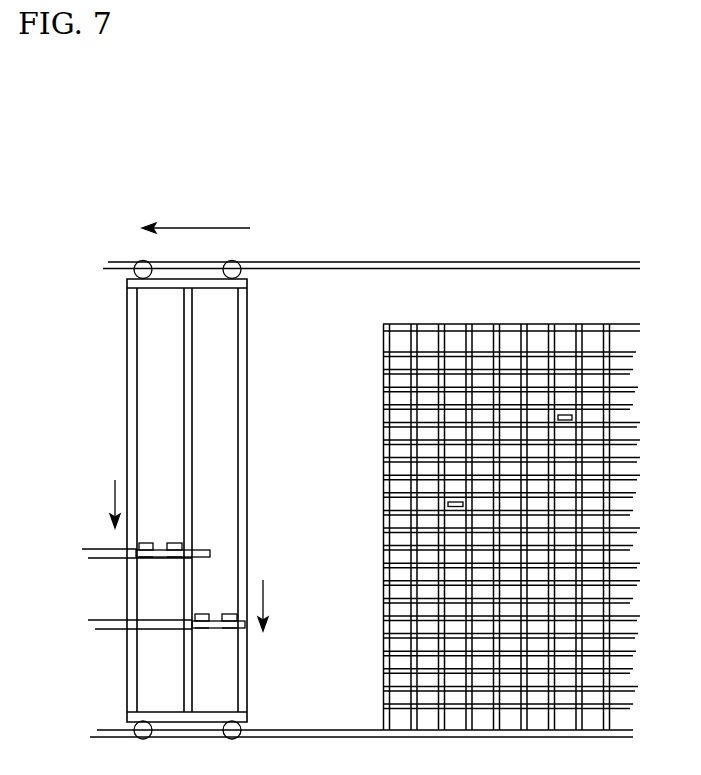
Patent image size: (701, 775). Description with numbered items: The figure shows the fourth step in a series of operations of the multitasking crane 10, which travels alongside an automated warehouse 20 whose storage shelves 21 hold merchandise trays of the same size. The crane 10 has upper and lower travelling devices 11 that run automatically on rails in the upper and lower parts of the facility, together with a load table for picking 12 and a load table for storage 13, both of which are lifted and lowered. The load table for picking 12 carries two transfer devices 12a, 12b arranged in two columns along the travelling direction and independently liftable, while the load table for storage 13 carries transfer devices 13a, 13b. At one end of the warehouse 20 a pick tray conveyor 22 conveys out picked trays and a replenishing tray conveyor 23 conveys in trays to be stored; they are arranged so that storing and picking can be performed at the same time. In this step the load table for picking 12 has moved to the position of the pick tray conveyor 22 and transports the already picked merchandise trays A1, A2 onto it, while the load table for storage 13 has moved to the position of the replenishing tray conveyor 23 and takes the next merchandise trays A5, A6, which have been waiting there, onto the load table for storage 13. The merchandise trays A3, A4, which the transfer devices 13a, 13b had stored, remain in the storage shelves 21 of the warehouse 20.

The multitasking crane 10 is at (117, 307).
The travelling devices 11 is at (243, 284).
The load table for picking 12 is at (158, 559).
The transfer device 12a is at (143, 559).
The transfer device 12b is at (176, 559).
The load table for storage 13 is at (213, 630).
The transfer device 13a is at (200, 630).
The transfer device 13b is at (233, 630).
The automated warehouse 20 is at (566, 324).
The storage shelves 21 is at (538, 342).
The pick tray conveyor 22 is at (101, 552).
The replenishing tray conveyor 23 is at (107, 623).
The merchandise tray A1 is at (147, 537).
The merchandise tray A2 is at (175, 537).
The merchandise tray A3 is at (448, 503).
The merchandise tray A4 is at (572, 415).
The merchandise tray A5 is at (203, 608).
The merchandise tray A6 is at (230, 608).